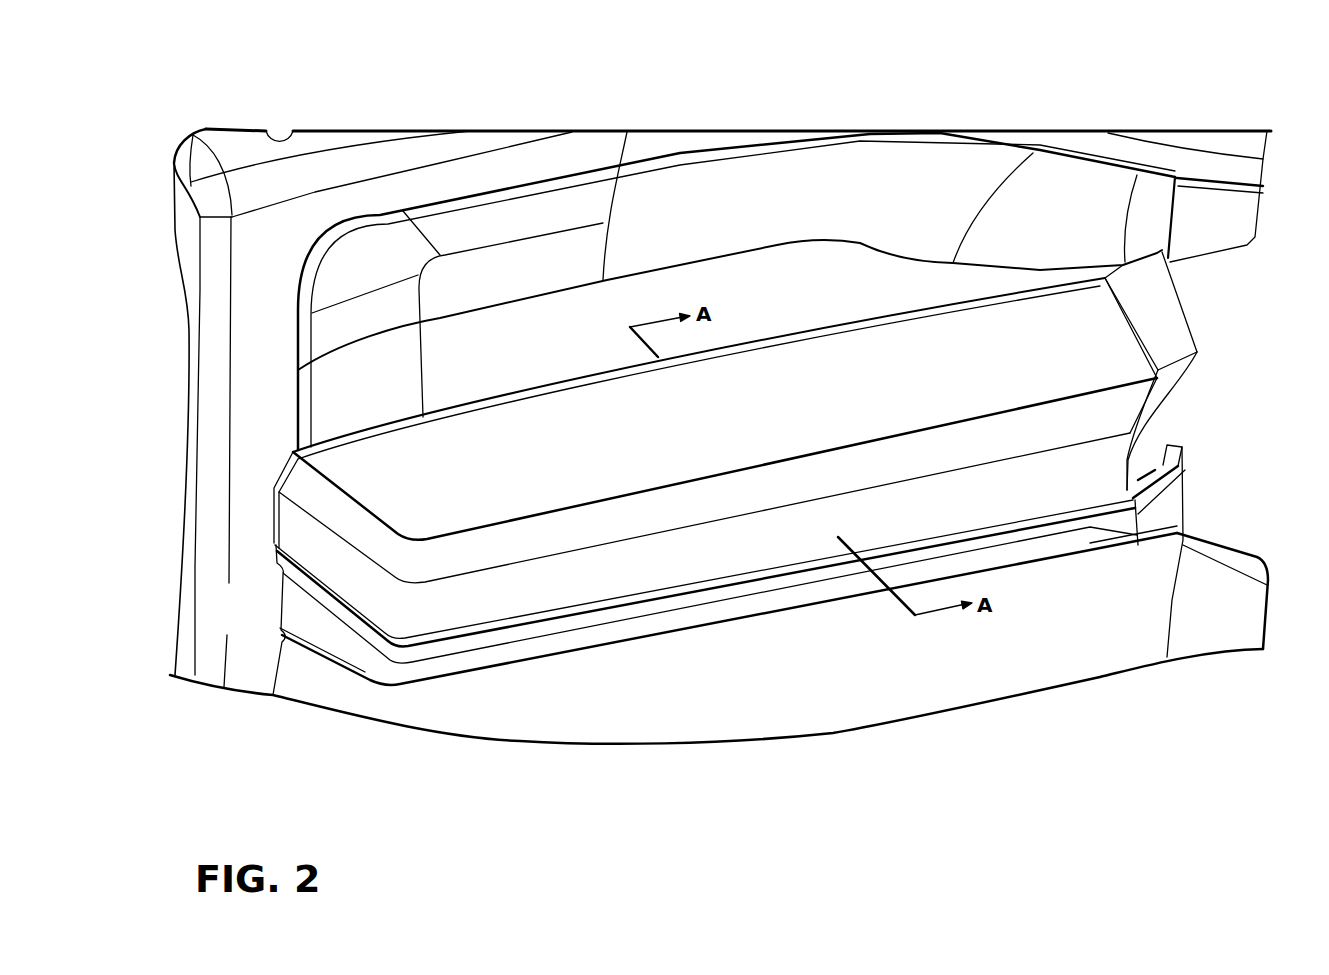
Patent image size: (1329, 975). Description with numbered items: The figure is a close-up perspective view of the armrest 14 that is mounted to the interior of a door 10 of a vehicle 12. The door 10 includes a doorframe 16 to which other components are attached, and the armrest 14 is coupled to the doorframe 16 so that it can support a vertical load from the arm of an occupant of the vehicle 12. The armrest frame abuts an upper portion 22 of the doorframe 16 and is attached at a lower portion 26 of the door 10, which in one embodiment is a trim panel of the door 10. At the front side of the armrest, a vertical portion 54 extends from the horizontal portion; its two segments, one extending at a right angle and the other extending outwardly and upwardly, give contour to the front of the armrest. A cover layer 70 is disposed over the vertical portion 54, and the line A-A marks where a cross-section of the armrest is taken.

The door 10 is at (227, 128).
The vehicle 12 is at (1093, 100).
The armrest 14 is at (267, 455).
The doorframe 16 is at (185, 215).
The upper portion 22 is at (350, 387).
The lower portion 26 is at (440, 697).
The vertical portion 54 is at (1153, 327).
The cover layer 70 is at (1148, 298).